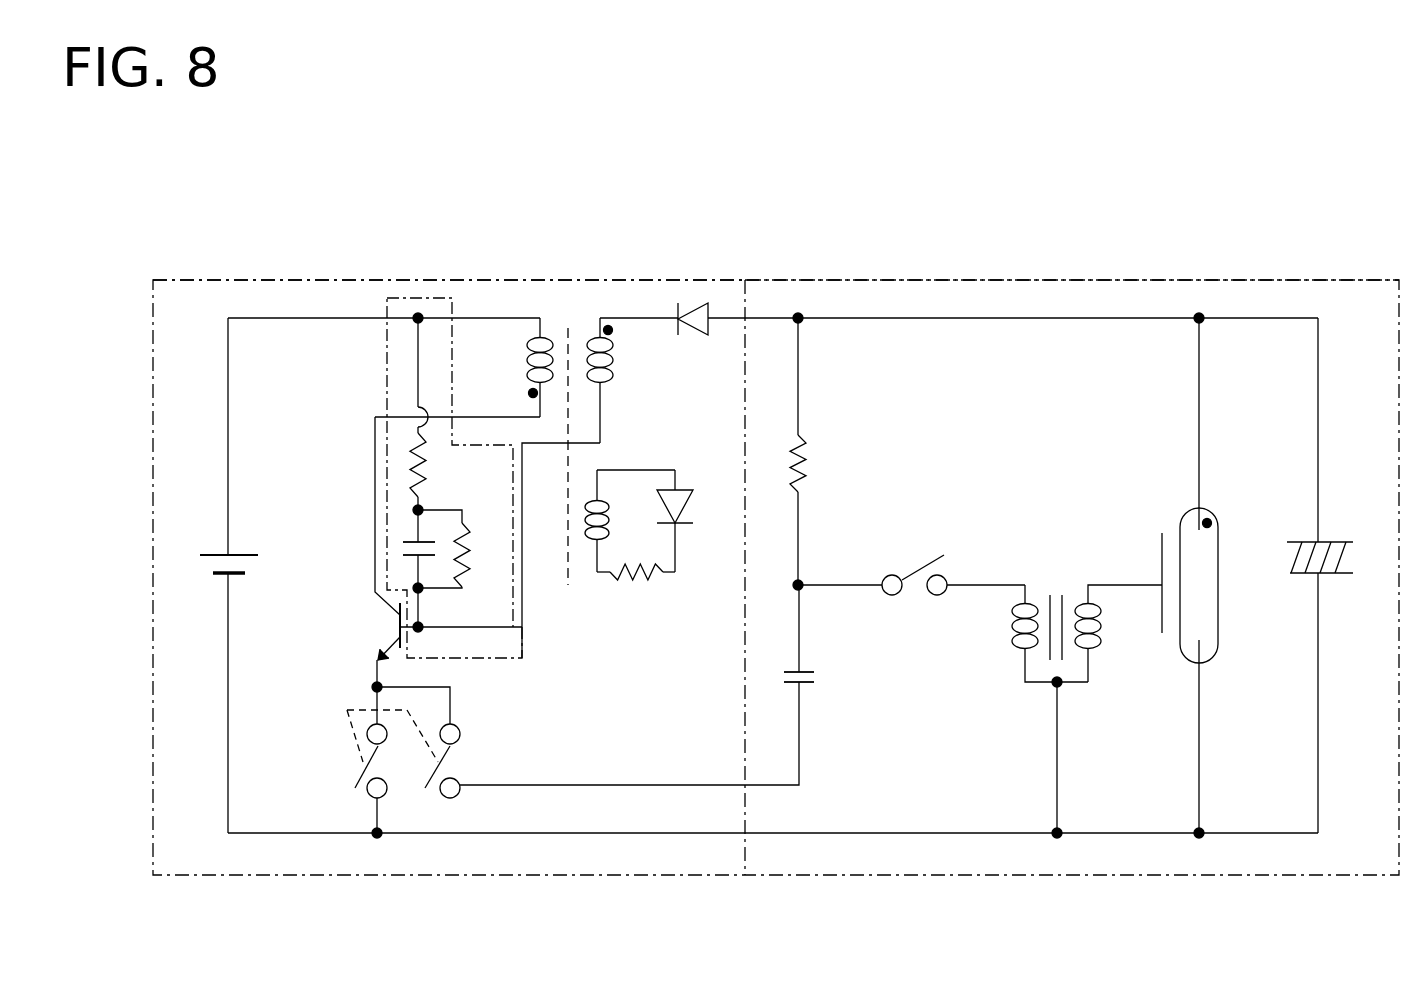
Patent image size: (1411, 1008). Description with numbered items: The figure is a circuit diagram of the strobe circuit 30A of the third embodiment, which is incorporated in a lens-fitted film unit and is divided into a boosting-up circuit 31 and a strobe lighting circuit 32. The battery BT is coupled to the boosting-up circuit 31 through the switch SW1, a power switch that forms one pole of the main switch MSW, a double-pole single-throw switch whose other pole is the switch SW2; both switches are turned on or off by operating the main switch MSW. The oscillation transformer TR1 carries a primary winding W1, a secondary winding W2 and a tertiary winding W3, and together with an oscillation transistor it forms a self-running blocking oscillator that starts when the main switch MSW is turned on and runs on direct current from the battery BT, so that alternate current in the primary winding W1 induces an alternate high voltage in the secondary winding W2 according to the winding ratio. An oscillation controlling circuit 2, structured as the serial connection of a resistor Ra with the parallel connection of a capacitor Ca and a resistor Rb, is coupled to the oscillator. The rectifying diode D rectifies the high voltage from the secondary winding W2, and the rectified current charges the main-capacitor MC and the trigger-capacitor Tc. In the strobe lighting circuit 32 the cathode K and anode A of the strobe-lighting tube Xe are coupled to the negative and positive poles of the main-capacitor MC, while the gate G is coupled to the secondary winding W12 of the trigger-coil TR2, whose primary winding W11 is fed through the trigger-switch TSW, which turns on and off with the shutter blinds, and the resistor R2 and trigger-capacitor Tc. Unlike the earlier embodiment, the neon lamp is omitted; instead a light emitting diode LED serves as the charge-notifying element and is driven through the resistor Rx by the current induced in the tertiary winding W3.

The strobe circuit 30A is at (766, 194).
The boosting-up circuit 31 is at (316, 280).
The strobe lighting circuit 32 is at (1085, 280).
The oscillation controlling circuit 2 is at (392, 455).
The battery BT is at (207, 575).
The oscillation transformer TR1 is at (569, 427).
The primary winding W1 is at (515, 367).
The secondary winding W2 is at (591, 488).
The tertiary winding W3 is at (590, 548).
The rectifying diode D is at (693, 337).
The resistor Ra is at (439, 414).
The resistor Rb is at (463, 549).
The capacitor Ca is at (403, 547).
The light emitting diode LED is at (694, 514).
The resistor Rx is at (636, 591).
The resistor R2 is at (818, 451).
The trigger-capacitor Tc is at (655, 685).
The trigger-switch TSW is at (911, 560).
The trigger-coil TR2 is at (1057, 664).
The primary winding W11 is at (1020, 633).
The secondary winding W12 is at (1118, 633).
The gate G is at (1144, 583).
The cathode K is at (1215, 424).
The anode A is at (1215, 736).
The strobe-lighting tube Xe is at (1234, 585).
The main-capacitor MC is at (1326, 575).
The switch SW1 is at (336, 778).
The switch SW2 is at (449, 742).
The main switch MSW is at (403, 811).